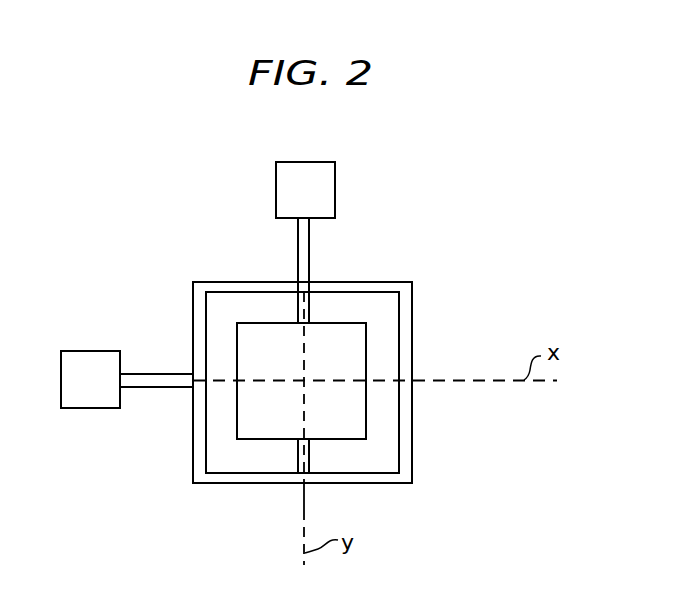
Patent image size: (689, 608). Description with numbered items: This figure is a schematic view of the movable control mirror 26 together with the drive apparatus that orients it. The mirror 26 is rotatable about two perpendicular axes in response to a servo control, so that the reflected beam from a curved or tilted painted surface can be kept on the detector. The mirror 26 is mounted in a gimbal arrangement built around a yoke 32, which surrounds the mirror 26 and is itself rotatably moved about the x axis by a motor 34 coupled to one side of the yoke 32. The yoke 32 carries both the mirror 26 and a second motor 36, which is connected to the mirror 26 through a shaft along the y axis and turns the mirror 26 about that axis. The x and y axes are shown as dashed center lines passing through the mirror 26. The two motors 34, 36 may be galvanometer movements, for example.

The control mirror 26 is at (357, 342).
The yoke 32 is at (351, 282).
The motor 34 is at (92, 351).
The motor 36 is at (322, 162).